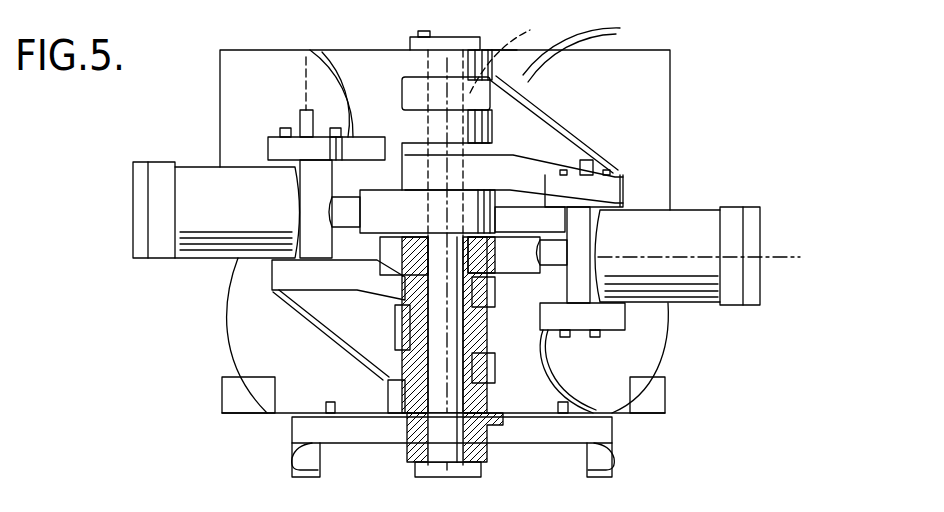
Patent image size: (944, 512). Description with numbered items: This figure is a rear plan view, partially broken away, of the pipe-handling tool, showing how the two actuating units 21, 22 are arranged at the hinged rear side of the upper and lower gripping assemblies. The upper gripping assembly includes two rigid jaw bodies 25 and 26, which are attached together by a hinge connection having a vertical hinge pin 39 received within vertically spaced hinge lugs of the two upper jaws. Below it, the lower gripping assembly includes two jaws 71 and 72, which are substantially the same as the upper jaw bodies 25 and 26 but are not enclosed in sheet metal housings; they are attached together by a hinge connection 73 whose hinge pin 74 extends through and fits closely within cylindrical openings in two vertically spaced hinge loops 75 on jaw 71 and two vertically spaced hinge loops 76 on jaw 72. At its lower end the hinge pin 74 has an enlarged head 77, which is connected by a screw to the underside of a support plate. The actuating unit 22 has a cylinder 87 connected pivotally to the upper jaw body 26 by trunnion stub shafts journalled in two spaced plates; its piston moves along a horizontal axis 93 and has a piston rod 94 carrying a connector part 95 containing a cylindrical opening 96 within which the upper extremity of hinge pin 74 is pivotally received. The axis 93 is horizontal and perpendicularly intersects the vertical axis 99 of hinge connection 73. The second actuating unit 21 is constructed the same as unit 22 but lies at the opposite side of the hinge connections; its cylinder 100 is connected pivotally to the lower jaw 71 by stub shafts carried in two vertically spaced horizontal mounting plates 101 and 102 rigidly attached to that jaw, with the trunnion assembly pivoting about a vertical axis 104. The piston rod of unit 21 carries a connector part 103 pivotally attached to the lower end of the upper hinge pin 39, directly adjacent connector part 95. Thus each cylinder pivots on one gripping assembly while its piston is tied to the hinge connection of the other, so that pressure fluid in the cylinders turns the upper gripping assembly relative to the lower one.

The actuating unit 21 is at (198, 224).
The actuating unit 22 is at (676, 252).
The jaw body 25 is at (364, 66).
The jaw body 26 is at (600, 33).
The hinge pin 39 is at (526, 39).
The jaw 71 is at (352, 401).
The jaw 72 is at (537, 406).
The hinge connection 73 is at (380, 454).
The hinge pin 74 is at (457, 344).
The hinge loops 75 is at (487, 298).
The hinge loops 76 is at (410, 340).
The enlarged head 77 is at (417, 475).
The cylinder 87 is at (707, 305).
The axis 93 is at (673, 241).
The piston rod 94 is at (550, 255).
The connector part 95 is at (514, 194).
The cylindrical opening 96 is at (462, 256).
The vertical axis 99 is at (400, 287).
The cylinder 100 is at (200, 168).
The mounting plate 101 is at (268, 138).
The mounting plate 102 is at (283, 270).
The connector part 103 is at (375, 200).
The pivotal axis 104 is at (305, 73).